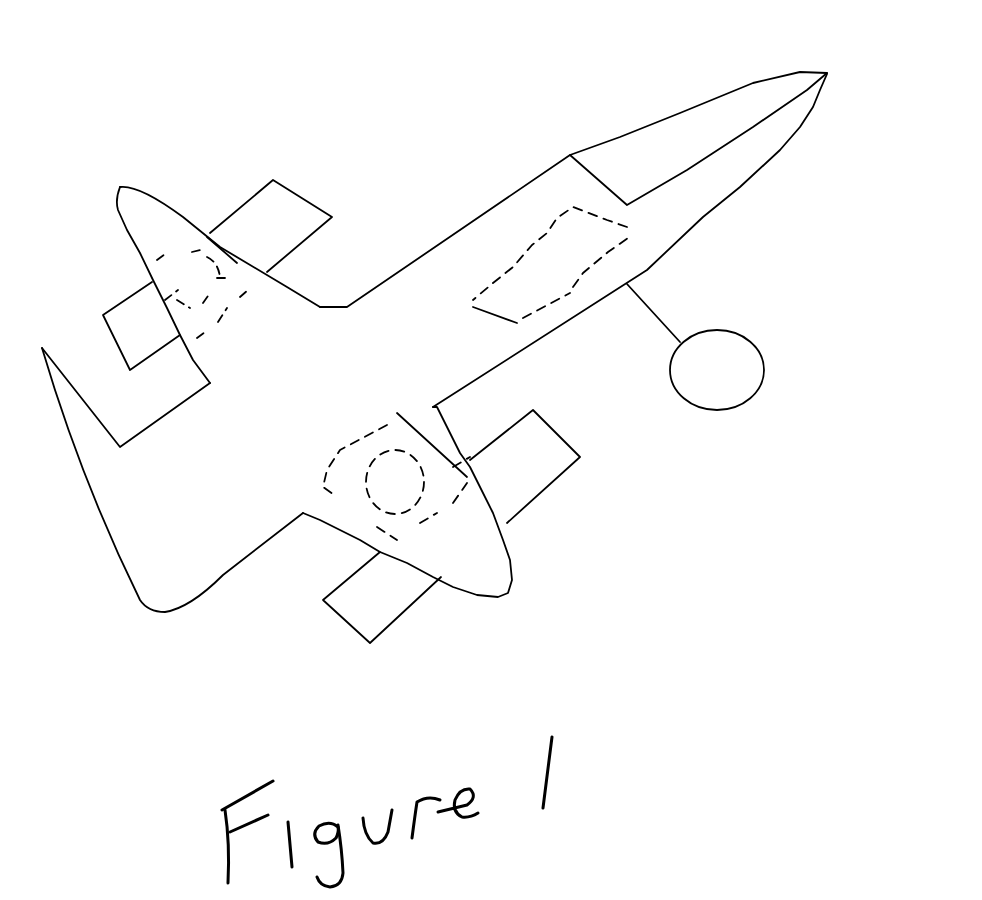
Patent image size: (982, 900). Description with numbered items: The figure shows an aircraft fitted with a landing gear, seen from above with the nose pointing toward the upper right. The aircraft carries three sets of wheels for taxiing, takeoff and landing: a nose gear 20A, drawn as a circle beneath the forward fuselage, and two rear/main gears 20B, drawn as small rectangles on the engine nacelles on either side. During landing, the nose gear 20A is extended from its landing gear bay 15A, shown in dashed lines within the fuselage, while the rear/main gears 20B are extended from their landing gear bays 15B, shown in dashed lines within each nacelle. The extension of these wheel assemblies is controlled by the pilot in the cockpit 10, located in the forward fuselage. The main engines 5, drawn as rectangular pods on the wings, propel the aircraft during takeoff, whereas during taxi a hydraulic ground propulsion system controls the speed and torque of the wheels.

The cockpit 10 is at (682, 123).
The main engines 5 is at (246, 203).
The landing gear bay 15A is at (630, 233).
The landing gear bay 15B is at (177, 243).
The nose gear 20A is at (755, 342).
The rear/main gears 20B is at (170, 257).